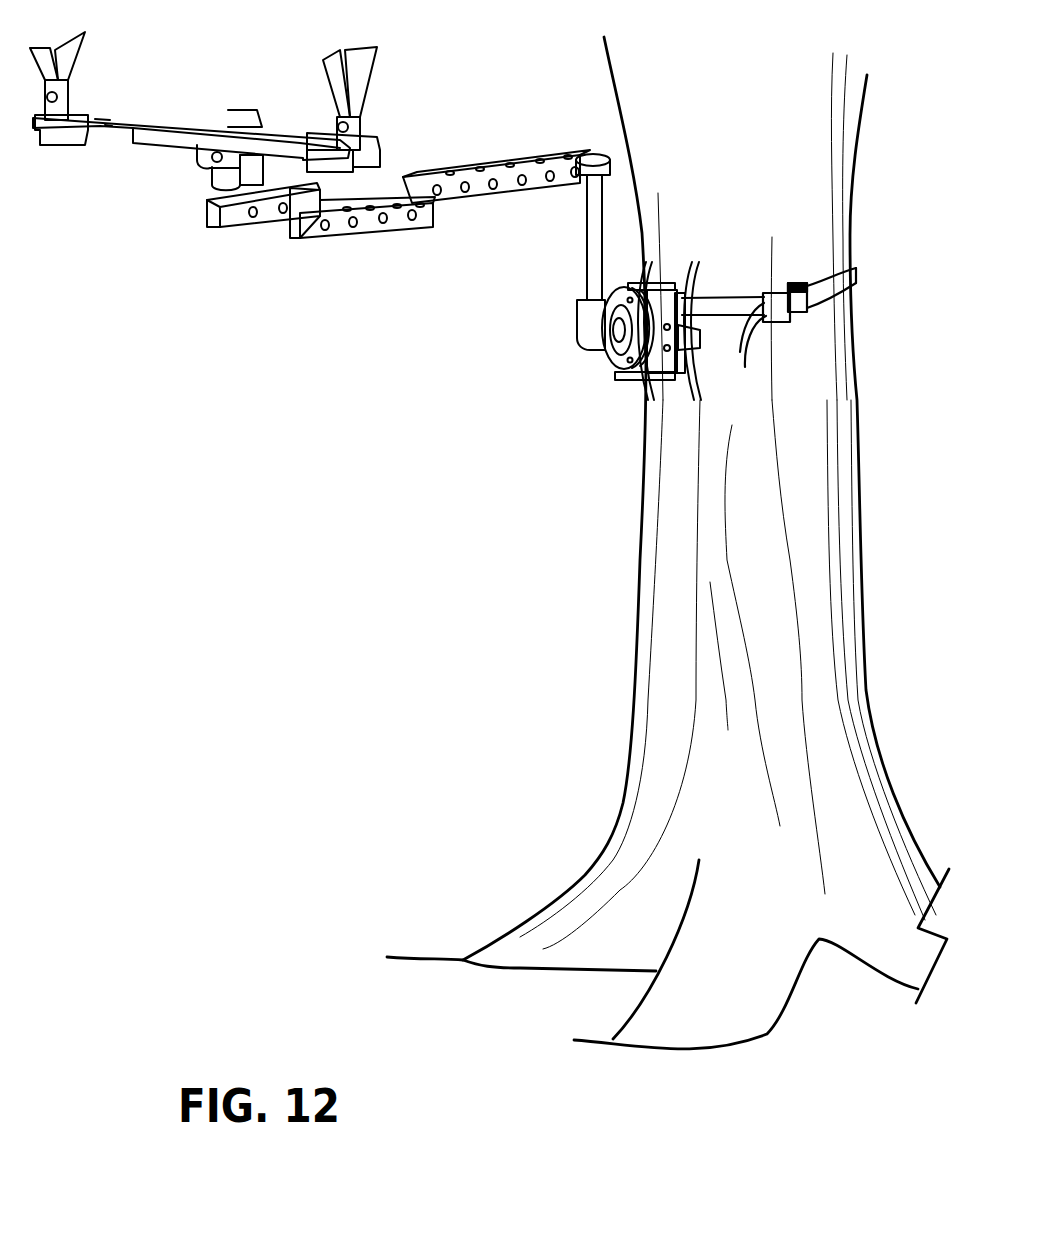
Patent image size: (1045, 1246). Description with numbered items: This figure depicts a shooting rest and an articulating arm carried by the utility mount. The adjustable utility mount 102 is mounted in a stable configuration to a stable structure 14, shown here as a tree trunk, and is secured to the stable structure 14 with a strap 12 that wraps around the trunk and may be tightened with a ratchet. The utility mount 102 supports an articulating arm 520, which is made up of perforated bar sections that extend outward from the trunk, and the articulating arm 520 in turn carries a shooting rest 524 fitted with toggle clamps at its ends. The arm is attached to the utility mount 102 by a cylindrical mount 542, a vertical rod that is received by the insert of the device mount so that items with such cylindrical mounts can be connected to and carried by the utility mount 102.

The strap 12 is at (858, 272).
The stable structure 14 is at (807, 233).
The utility mount 102 is at (594, 389).
The articulating arm 520 is at (392, 245).
The shooting rest 524 is at (137, 120).
The cylindrical mount 542 is at (598, 264).